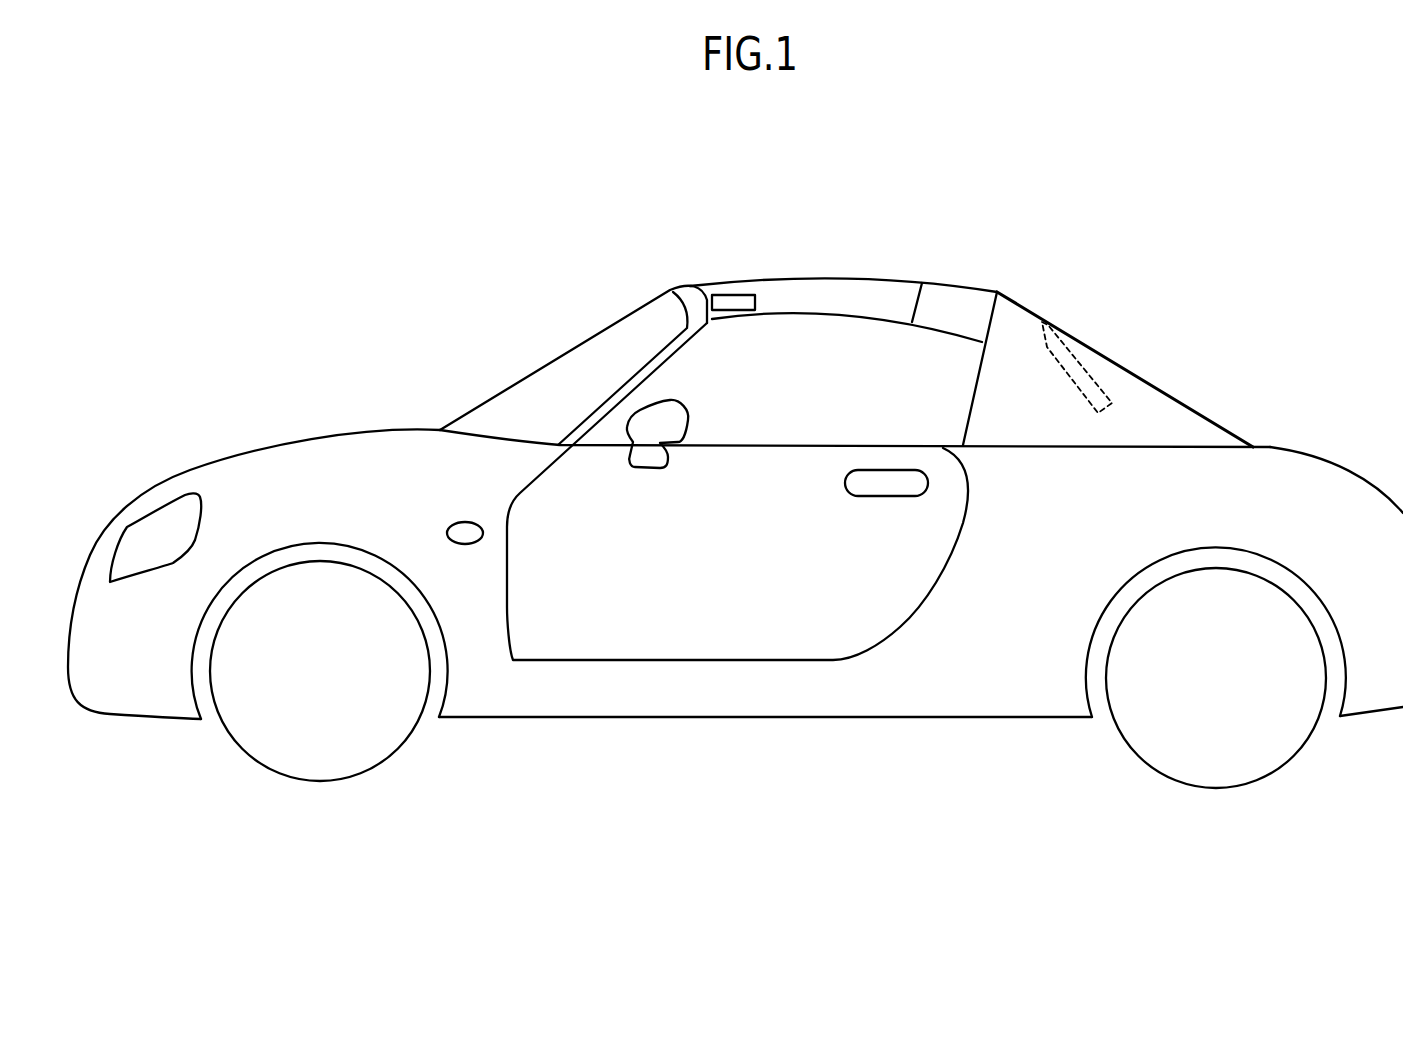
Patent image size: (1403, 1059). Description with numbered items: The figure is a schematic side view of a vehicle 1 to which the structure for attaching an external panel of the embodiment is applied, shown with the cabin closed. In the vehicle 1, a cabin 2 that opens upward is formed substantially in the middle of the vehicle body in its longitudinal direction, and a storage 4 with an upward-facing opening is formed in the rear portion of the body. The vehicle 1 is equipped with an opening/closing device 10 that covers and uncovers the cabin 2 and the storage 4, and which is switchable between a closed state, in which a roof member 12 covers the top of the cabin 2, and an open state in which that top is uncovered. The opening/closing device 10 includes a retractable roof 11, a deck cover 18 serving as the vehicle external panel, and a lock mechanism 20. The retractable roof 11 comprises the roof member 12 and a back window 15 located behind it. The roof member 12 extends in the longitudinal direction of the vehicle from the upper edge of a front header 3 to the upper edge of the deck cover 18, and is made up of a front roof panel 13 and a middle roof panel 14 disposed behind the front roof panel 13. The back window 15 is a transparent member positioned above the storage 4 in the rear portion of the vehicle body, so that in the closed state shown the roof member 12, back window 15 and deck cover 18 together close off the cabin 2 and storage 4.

The vehicle 1 is at (400, 247).
The cabin 2 is at (746, 569).
The front header 3 is at (672, 290).
The storage 4 is at (1052, 574).
The opening/closing device 10 is at (1203, 277).
The retractable roof 11 is at (930, 212).
The roof member 12 is at (805, 275).
The front roof panel 13 is at (875, 277).
The middle roof panel 14 is at (955, 280).
The back window 15 is at (1090, 373).
The deck cover 18 is at (1190, 395).
The lock mechanism 20 is at (730, 293).